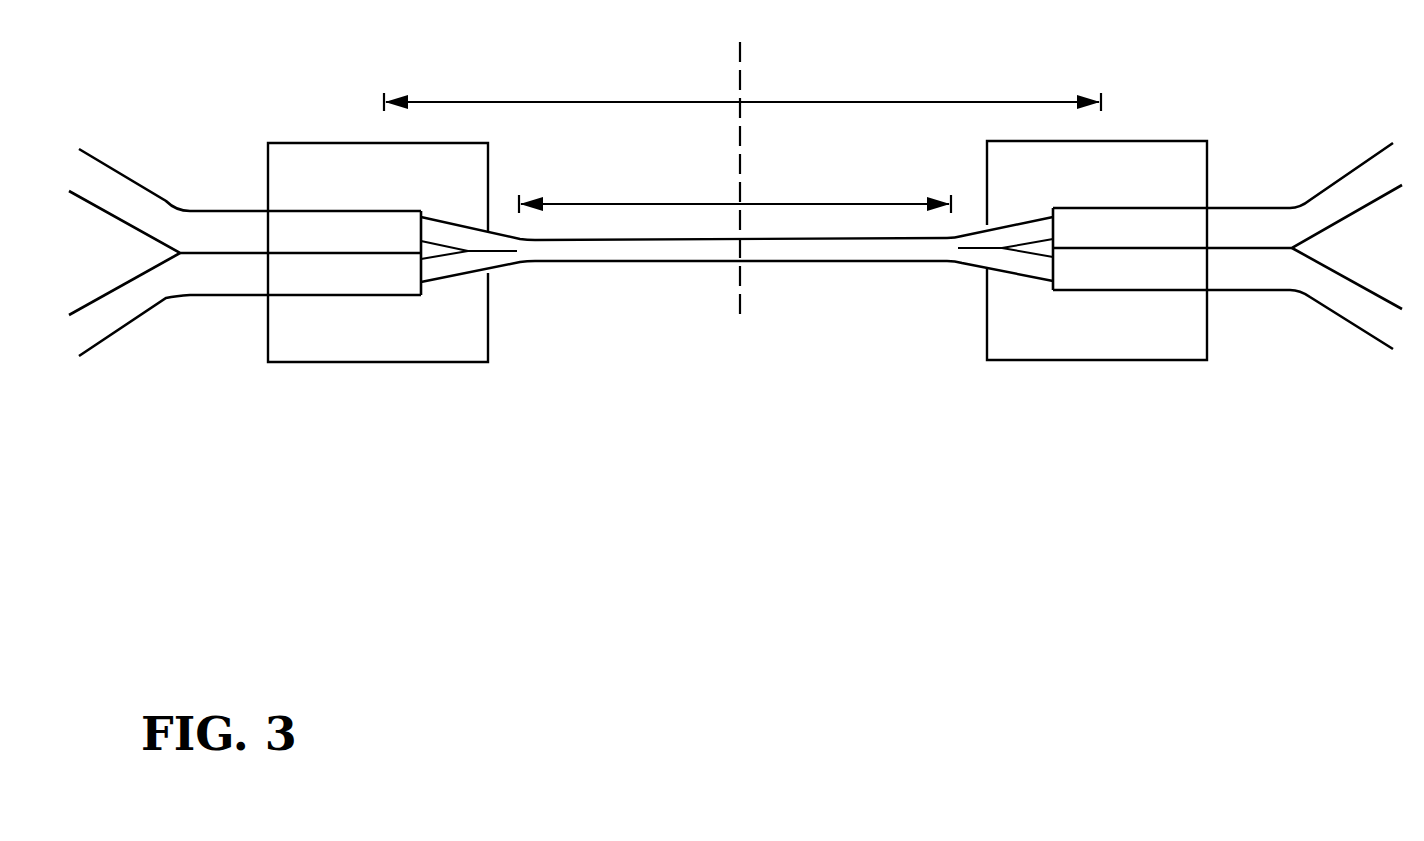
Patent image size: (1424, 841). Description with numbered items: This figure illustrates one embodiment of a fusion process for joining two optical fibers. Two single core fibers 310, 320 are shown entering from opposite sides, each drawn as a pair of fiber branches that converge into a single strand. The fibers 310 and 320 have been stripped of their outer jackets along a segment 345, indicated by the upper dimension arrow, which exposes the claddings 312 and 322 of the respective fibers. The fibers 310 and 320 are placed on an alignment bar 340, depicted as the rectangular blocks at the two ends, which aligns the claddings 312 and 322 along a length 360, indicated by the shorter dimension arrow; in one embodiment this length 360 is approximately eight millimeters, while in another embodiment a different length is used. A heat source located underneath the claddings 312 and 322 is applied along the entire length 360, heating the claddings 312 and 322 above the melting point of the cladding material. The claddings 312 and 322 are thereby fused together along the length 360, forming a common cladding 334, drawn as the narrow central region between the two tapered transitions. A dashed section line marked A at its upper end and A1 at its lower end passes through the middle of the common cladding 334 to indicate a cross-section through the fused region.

The single core fiber 310 is at (735, 198).
The cladding 312 is at (462, 229).
The single core fiber 320 is at (735, 302).
The cladding 322 is at (463, 260).
The common cladding 334 is at (741, 249).
The alignment bar 340 is at (362, 349).
The segment 345 is at (828, 101).
The length 360 is at (826, 203).
The section line A is at (778, 160).
The section line A1 is at (789, 347).